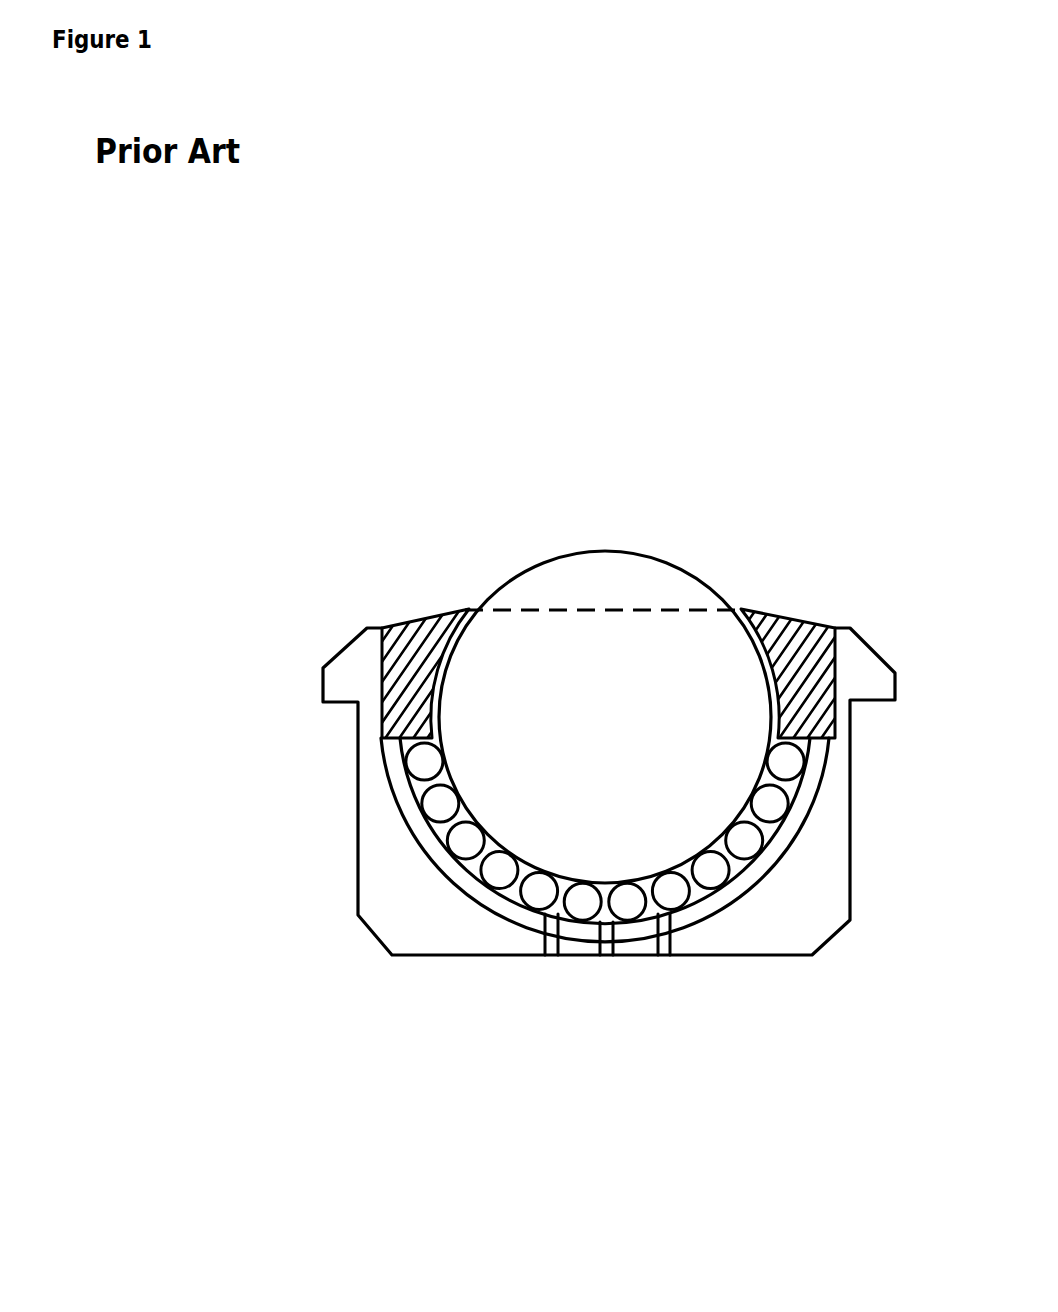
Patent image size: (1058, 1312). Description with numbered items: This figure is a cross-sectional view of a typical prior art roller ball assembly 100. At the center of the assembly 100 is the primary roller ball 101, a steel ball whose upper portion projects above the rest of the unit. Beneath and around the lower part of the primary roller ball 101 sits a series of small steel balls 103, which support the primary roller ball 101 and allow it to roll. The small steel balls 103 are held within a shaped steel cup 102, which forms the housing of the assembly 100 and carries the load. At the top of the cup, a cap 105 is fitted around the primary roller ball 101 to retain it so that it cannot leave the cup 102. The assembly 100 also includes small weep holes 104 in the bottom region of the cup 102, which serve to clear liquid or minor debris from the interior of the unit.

The roller ball assembly 100 is at (514, 316).
The primary roller ball 101 is at (557, 519).
The shaped steel cup 102 is at (346, 885).
The small steel balls 103 is at (499, 887).
The weep holes 104 is at (669, 976).
The cap 105 is at (790, 604).